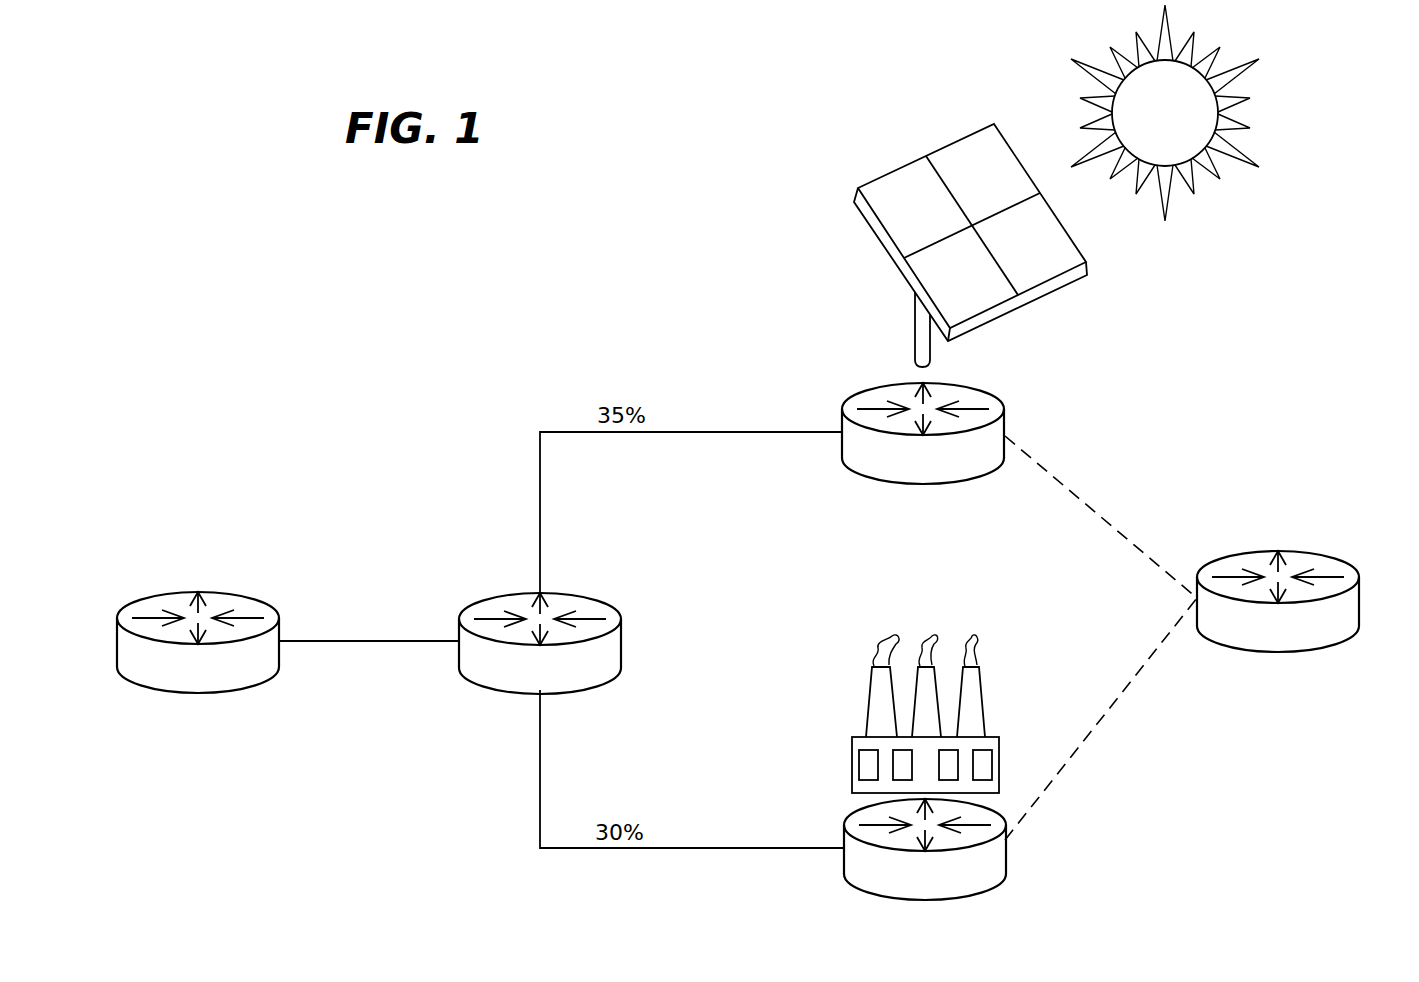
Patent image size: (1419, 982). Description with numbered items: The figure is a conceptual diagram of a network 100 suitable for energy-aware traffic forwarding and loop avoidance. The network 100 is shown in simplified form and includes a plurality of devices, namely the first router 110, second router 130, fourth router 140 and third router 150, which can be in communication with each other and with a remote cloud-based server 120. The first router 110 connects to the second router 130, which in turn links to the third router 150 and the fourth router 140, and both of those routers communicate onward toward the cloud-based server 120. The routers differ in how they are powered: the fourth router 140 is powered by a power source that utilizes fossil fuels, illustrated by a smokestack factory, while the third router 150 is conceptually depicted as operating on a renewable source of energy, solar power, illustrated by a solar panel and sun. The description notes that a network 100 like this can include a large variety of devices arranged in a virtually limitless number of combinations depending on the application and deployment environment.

The network 100 is at (385, 360).
The router 110 is at (188, 593).
The cloud-based server 120 is at (1315, 552).
The router 130 is at (480, 600).
The router 140 is at (857, 890).
The router 150 is at (870, 388).